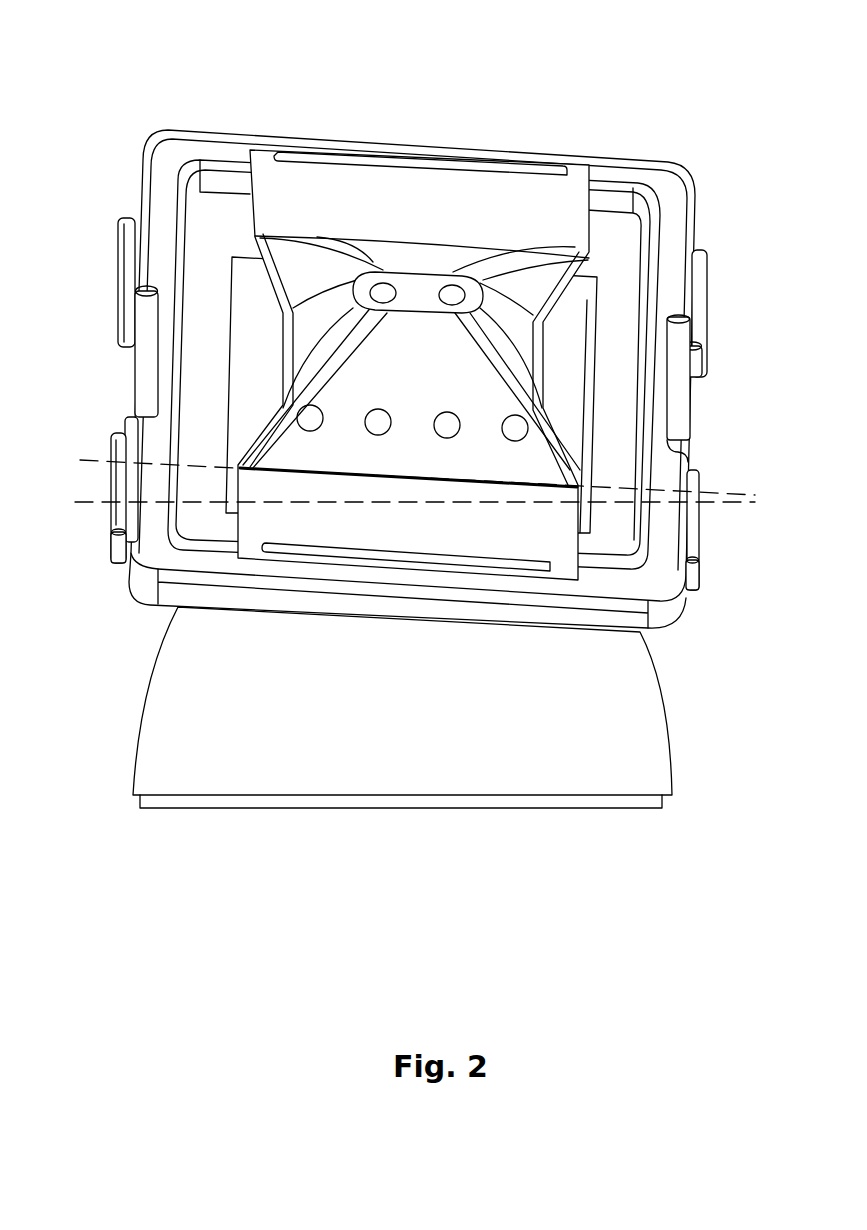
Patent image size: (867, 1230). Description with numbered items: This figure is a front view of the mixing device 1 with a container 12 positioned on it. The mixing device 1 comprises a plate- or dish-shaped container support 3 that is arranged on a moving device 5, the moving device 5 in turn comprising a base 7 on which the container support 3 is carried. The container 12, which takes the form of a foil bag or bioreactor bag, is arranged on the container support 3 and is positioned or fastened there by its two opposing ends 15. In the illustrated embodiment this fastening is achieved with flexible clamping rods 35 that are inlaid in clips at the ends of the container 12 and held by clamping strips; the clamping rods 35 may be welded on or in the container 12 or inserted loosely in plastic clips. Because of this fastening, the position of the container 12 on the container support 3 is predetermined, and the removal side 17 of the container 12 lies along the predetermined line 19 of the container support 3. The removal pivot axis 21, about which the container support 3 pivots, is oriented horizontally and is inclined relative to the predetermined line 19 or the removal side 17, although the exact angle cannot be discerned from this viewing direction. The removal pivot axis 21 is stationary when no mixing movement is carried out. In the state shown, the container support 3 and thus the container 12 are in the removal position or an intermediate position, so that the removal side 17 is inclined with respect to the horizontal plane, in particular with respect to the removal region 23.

The mixing device 1 is at (737, 40).
The container support 3 is at (163, 193).
The moving device 5 is at (680, 687).
The base 7 is at (148, 732).
The container 12 is at (487, 273).
The opposing ends 15 is at (423, 160).
The removal side 17 is at (387, 470).
The predetermined line 19 is at (95, 460).
The removal pivot axis 21 is at (95, 505).
The removal region 23 is at (547, 467).
The clamping rods 35 is at (357, 160).